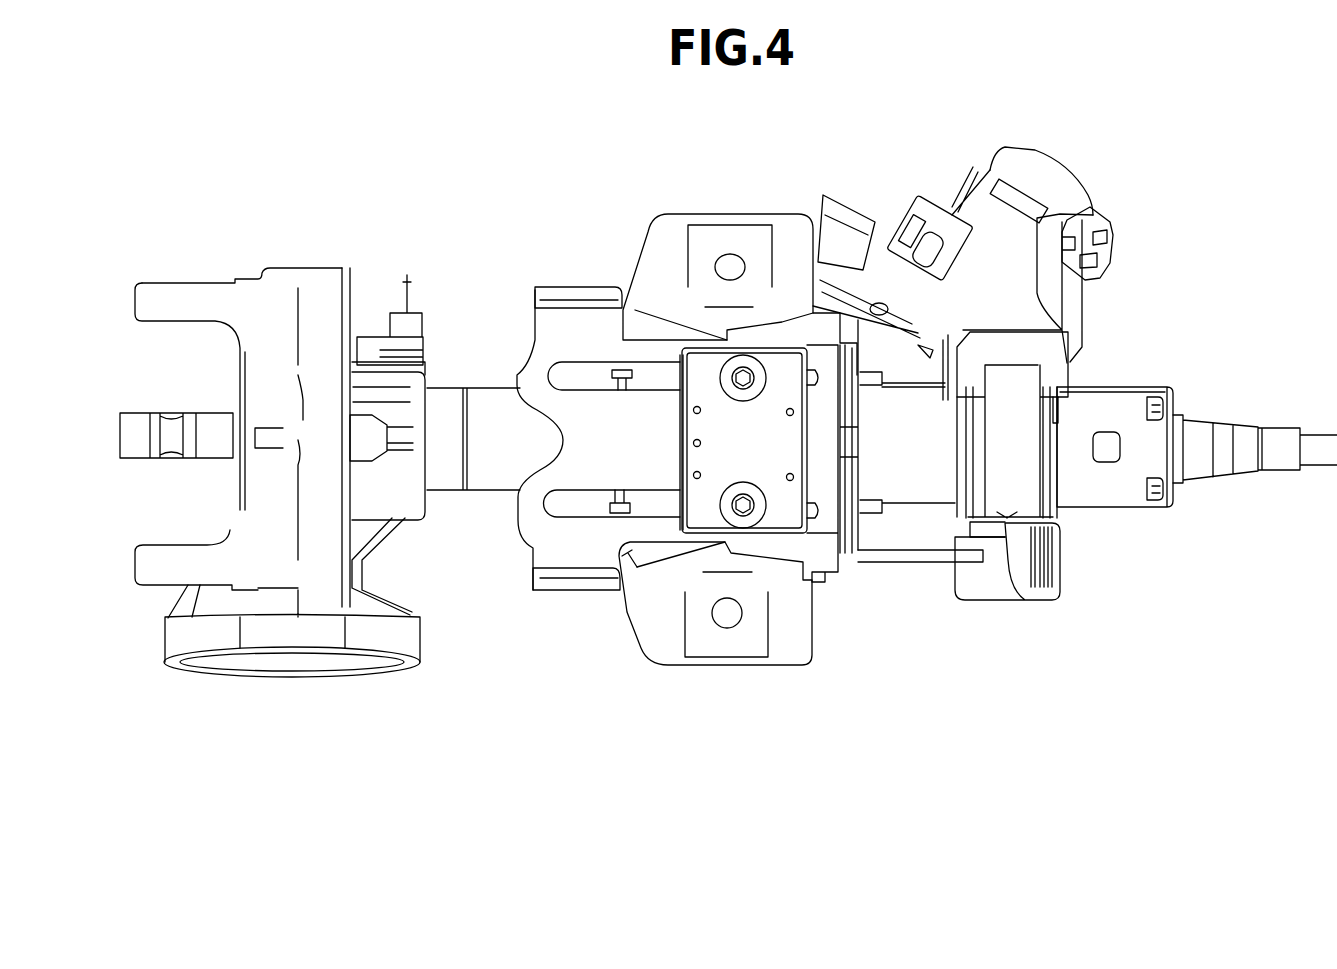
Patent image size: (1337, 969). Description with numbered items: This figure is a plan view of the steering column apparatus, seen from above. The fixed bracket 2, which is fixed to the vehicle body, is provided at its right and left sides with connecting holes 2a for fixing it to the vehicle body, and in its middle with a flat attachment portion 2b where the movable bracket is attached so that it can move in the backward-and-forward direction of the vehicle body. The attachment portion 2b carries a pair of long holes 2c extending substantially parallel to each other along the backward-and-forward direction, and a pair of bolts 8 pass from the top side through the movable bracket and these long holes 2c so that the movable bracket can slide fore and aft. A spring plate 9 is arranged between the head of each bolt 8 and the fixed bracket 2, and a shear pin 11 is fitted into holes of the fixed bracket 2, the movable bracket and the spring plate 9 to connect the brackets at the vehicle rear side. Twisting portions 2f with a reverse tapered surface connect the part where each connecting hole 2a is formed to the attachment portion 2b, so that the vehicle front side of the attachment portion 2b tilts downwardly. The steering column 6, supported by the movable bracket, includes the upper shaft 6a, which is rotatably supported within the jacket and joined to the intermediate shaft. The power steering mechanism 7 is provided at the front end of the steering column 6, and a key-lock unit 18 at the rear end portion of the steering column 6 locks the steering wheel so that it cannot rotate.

The fixed bracket 2 is at (660, 665).
The connecting hole 2a is at (730, 265).
The attachment portion 2b is at (663, 430).
The long hole 2c is at (558, 378).
The twisting portion 2f is at (648, 323).
The steering column 6 is at (1112, 400).
The upper shaft 6a is at (1248, 432).
The power steering mechanism 7 is at (308, 630).
The bolt 8 is at (741, 508).
The spring plate 9 is at (777, 507).
The shear pin 11 is at (793, 480).
The key-lock unit 18 is at (1065, 185).